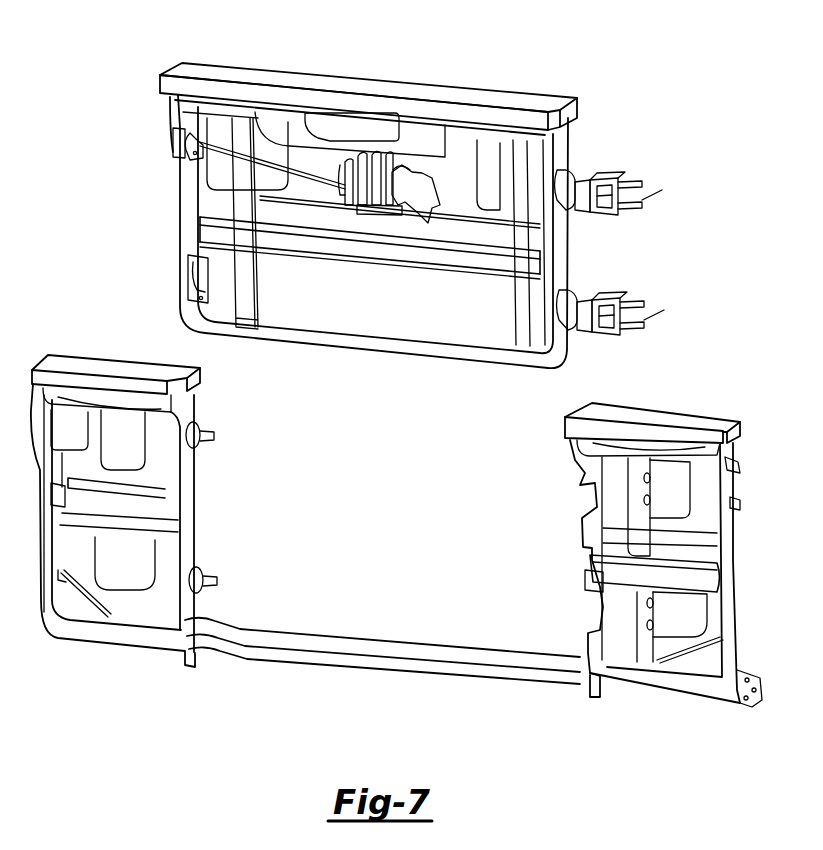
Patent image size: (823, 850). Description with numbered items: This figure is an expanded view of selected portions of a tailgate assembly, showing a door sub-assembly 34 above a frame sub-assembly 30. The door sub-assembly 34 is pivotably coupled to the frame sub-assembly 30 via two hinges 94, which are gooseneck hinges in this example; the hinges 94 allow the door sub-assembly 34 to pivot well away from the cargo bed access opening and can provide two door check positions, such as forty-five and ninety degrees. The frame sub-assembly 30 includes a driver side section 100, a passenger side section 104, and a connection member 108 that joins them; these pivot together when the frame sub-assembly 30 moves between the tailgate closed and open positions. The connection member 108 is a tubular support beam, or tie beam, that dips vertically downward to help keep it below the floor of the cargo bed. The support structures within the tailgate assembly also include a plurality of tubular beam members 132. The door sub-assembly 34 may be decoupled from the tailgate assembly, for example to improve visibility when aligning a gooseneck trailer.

The door sub-assembly 34 is at (498, 73).
The hinges 94 is at (650, 190).
The frame sub-assembly 30 is at (650, 418).
The tubular beam members 132 is at (188, 504).
The driver side section 100 is at (185, 673).
The connection member 108 is at (593, 715).
The passenger side section 104 is at (737, 730).